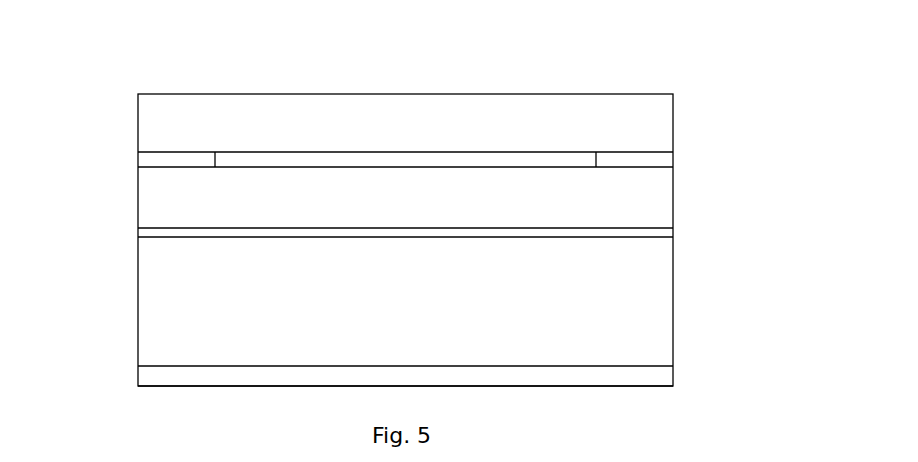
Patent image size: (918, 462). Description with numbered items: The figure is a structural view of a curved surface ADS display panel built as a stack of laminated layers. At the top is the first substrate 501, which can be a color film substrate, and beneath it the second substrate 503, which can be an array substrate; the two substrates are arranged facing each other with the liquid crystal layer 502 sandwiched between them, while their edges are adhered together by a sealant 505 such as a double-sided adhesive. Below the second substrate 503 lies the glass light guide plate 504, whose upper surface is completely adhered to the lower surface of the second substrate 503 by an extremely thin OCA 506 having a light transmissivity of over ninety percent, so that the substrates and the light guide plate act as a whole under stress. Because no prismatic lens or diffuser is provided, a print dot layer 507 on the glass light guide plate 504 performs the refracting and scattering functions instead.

The first substrate 501 is at (443, 232).
The liquid crystal layer 502 is at (405, 104).
The second substrate 503 is at (443, 193).
The glass light guide plate 504 is at (365, 316).
The sealant 505 is at (138, 143).
The OCA 506 is at (365, 212).
The print dot layer 507 is at (443, 357).